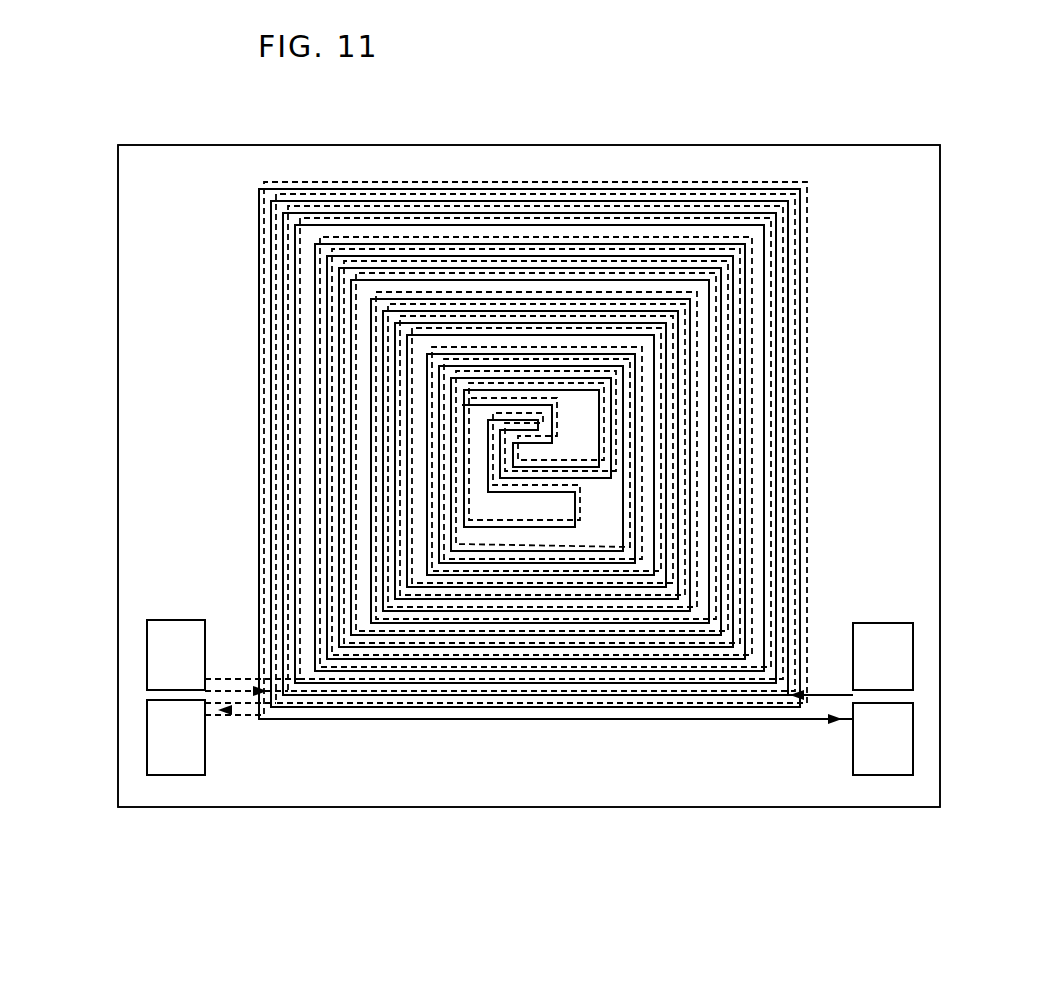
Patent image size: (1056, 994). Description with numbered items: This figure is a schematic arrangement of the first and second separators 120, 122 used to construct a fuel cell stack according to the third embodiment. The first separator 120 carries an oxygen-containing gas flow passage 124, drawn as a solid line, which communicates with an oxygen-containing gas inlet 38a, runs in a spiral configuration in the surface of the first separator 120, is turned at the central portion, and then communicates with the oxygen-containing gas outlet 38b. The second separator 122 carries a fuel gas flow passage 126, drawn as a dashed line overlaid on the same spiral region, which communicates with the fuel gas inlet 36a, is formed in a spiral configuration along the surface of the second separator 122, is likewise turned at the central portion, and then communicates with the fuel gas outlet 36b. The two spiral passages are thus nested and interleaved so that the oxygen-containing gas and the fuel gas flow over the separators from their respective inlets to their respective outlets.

The first separator 120 is at (686, 112).
The second separator 122 is at (529, 476).
The oxygen-containing gas flow passage 124 is at (835, 692).
The fuel gas flow passage 126 is at (770, 710).
The fuel gas inlet 36a is at (905, 656).
The fuel gas outlet 36b is at (905, 742).
The oxygen-containing gas inlet 38a is at (152, 666).
The oxygen-containing gas outlet 38b is at (152, 751).